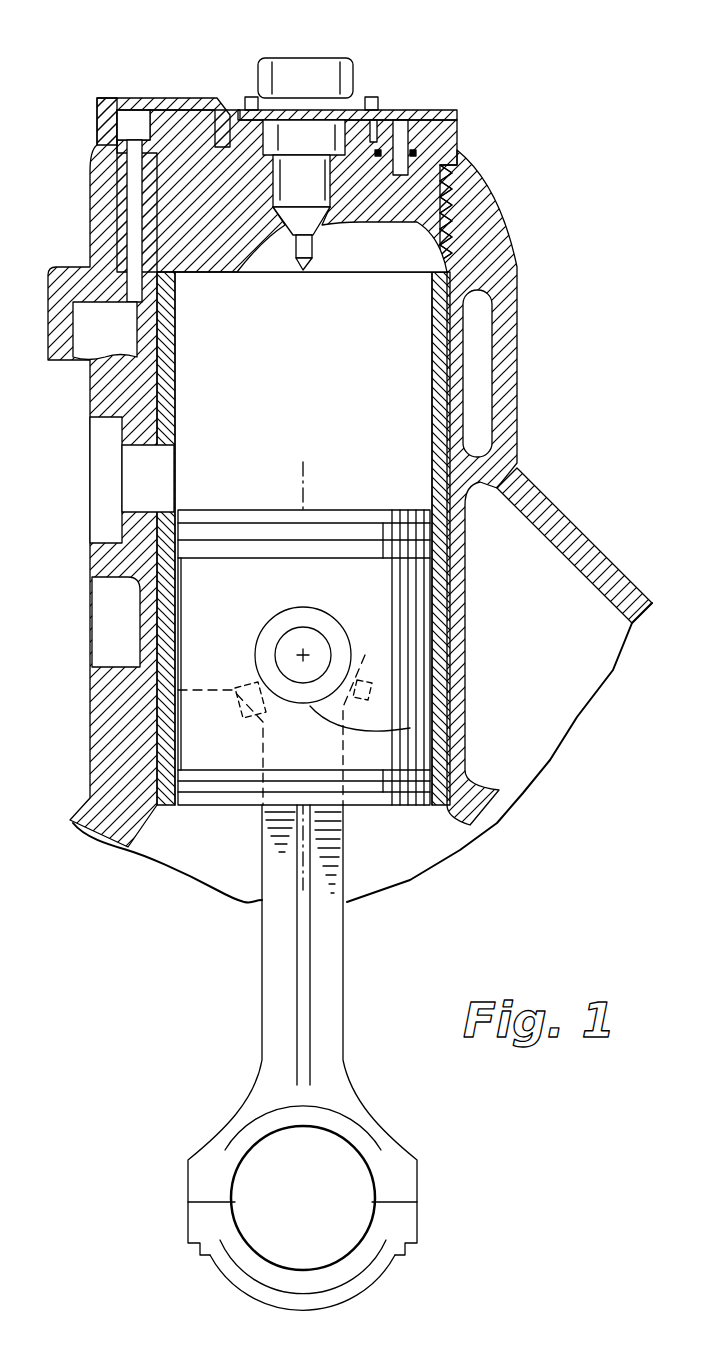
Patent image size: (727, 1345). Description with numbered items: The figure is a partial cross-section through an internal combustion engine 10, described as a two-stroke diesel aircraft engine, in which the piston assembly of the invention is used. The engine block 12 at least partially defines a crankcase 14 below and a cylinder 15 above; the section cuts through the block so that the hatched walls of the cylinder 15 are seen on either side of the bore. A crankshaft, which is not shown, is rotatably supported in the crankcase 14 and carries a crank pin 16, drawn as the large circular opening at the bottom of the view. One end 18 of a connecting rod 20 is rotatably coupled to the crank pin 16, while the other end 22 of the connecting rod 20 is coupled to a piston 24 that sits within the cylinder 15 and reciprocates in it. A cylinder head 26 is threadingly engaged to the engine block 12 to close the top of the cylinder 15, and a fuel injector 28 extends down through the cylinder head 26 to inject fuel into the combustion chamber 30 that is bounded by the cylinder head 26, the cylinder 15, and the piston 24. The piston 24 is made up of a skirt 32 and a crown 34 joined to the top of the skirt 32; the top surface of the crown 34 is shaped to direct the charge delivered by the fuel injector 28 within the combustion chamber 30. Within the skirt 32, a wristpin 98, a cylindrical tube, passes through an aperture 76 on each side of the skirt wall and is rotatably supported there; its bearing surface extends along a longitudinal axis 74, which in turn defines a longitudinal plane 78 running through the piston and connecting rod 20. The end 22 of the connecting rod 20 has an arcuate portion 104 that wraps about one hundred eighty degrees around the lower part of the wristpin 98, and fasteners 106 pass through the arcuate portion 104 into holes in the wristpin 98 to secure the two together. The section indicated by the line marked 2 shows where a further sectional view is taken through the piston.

The internal combustion engine 10 is at (560, 205).
The engine block 12 is at (560, 511).
The crankcase 14 is at (325, 1058).
The cylinder 15 is at (440, 347).
The crank pin 16 is at (325, 1253).
The end of connecting rod 18 is at (392, 1180).
The connecting rod 20 is at (340, 978).
The other end of connecting rod 22 is at (290, 736).
The piston 24 is at (380, 627).
The cylinder head 26 is at (448, 154).
The fuel injector 28 is at (303, 165).
The combustion chamber 30 is at (330, 335).
The skirt 32 is at (410, 688).
The crown 34 is at (268, 512).
The longitudinal axis 74 is at (305, 652).
The aperture 76 is at (283, 613).
The longitudinal plane 78 is at (305, 469).
The wristpin 98 is at (272, 632).
The arcuate portion 104 is at (410, 728).
The fasteners 106 is at (178, 692).
The section line 2- 2 is at (303, 433).